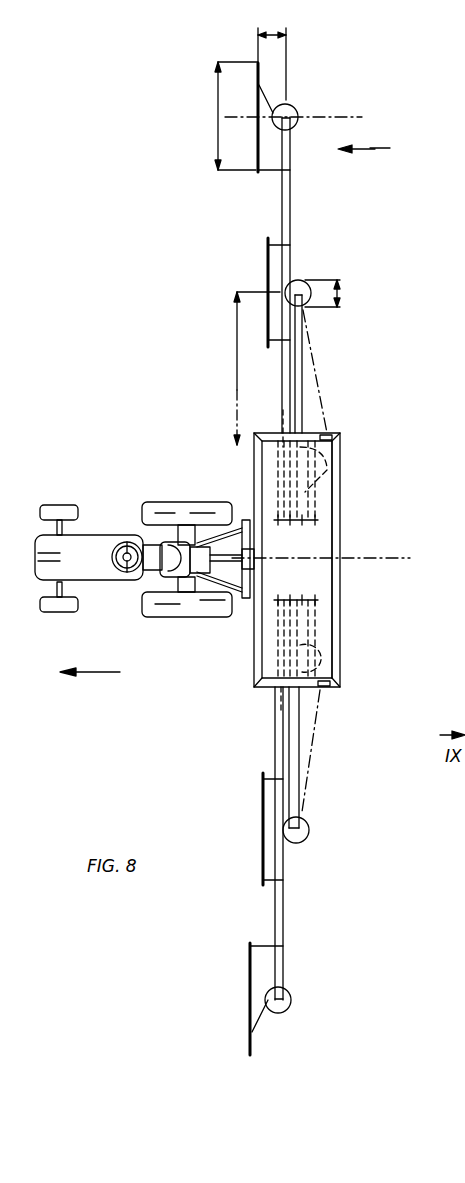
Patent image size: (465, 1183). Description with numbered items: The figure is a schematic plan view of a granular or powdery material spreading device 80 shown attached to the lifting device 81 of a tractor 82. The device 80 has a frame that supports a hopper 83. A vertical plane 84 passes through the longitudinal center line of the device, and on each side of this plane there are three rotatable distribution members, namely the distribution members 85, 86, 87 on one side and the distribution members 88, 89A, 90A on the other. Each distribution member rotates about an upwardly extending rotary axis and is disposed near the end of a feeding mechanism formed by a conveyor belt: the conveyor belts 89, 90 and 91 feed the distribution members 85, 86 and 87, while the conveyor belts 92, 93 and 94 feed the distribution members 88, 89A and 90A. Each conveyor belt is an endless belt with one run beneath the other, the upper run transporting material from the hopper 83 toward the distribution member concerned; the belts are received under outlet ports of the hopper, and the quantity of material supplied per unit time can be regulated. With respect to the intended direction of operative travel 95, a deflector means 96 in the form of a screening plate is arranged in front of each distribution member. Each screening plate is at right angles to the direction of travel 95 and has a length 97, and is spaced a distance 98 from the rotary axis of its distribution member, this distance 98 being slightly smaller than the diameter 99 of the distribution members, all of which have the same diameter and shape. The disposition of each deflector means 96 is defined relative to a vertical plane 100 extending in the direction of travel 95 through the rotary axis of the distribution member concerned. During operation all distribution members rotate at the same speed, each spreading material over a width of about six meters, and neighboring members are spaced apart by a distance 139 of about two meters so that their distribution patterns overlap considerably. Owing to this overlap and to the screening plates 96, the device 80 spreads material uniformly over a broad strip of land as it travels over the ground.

The spreading device 80 is at (348, 513).
The lifting device 81 is at (221, 500).
The tractor 82 is at (164, 498).
The hopper 83 is at (325, 548).
The vertical plane 84 is at (397, 560).
The distribution member 85 is at (291, 108).
The distribution member 86 is at (303, 282).
The distribution member 87 is at (335, 456).
The distribution member 88 is at (292, 993).
The conveyor belt 89 is at (288, 203).
The distribution member 89A is at (308, 822).
The conveyor belt 90 is at (298, 375).
The distribution member 90A is at (332, 645).
The conveyor belt 91 is at (338, 473).
The conveyor belt 92 is at (278, 925).
The conveyor belt 93 is at (292, 738).
The conveyor belt 94 is at (312, 620).
The direction of operative travel 95 is at (122, 657).
The deflector means 96 is at (252, 162).
The length 97 is at (218, 100).
The distance 98 is at (278, 26).
The diameter 99 is at (340, 297).
The vertical plane 100 is at (345, 117).
The distance 139 is at (236, 364).